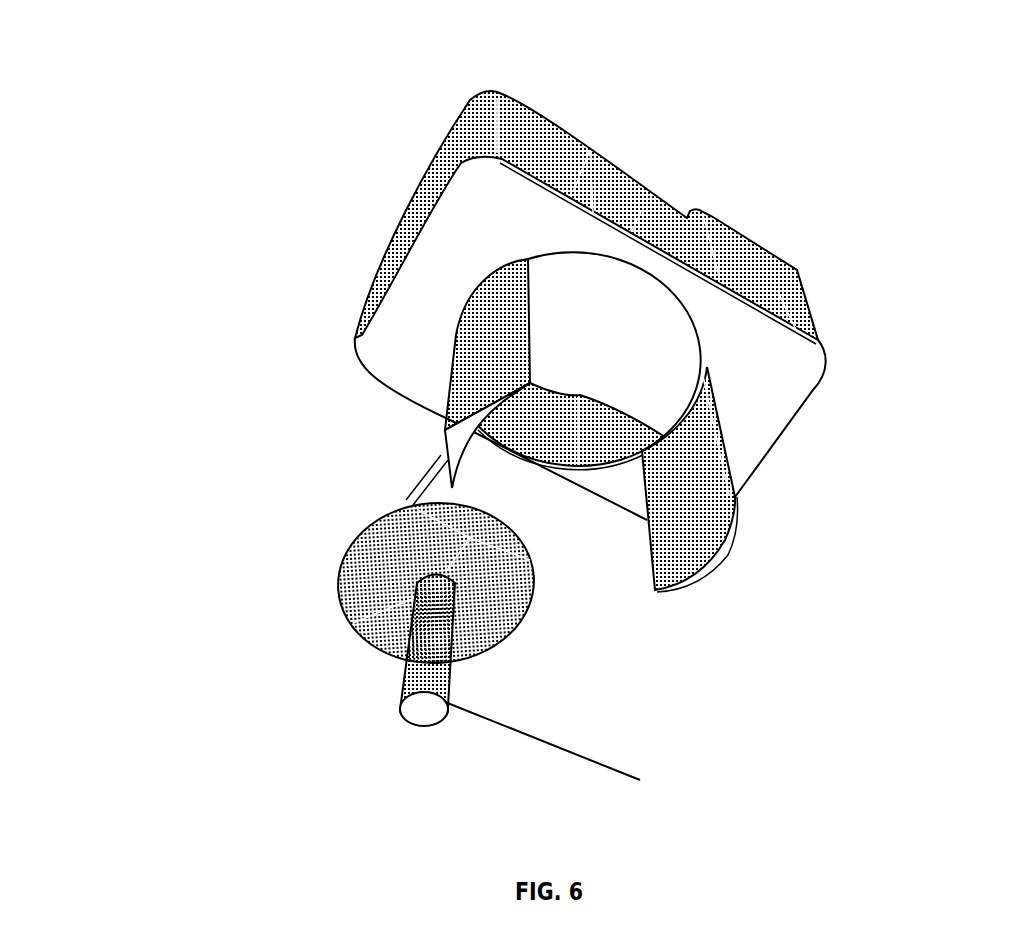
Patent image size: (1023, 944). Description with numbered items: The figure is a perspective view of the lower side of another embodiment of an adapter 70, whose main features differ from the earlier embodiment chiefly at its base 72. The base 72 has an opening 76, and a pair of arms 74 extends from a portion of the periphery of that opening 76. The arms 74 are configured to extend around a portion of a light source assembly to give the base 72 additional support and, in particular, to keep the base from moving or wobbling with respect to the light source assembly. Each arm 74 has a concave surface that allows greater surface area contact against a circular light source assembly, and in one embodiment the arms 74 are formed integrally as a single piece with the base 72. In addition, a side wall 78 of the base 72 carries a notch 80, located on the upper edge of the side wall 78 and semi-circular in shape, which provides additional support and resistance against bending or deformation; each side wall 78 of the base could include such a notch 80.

The adapter 70 is at (247, 155).
The base 72 is at (323, 310).
The arms 74 is at (477, 368).
The opening 76 is at (632, 362).
The side wall 78 is at (750, 283).
The notch 80 is at (660, 201).